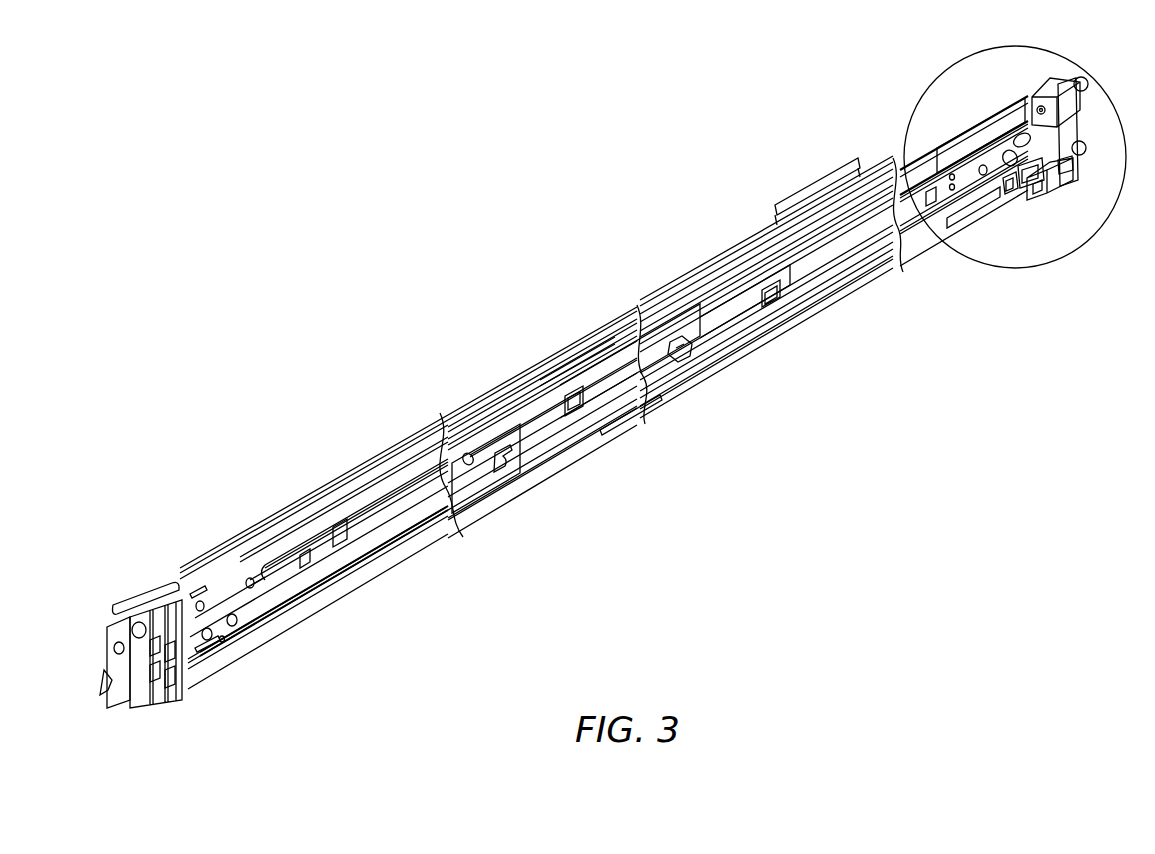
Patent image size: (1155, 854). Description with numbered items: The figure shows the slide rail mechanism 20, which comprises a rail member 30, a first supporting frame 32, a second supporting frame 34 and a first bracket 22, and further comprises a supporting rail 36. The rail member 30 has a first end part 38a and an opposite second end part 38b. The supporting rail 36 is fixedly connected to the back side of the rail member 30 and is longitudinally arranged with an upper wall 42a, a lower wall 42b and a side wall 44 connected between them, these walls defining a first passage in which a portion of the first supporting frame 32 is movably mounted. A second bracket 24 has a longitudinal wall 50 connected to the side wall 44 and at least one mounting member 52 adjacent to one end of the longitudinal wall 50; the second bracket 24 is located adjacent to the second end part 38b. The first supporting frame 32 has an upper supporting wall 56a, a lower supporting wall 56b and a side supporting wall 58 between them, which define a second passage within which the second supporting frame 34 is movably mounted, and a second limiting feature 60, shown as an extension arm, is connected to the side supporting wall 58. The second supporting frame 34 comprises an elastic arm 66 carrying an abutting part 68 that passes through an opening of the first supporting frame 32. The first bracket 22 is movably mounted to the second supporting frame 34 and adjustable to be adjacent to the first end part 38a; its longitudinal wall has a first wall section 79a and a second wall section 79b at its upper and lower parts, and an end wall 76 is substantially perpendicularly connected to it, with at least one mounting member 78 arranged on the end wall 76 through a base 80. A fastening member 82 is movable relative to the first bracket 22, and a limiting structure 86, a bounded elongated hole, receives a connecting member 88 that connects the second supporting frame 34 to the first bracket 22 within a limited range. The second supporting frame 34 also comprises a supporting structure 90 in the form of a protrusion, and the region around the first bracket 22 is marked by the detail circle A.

The slide rail mechanism 20 is at (502, 292).
The first bracket 22 is at (982, 104).
The second bracket 24 is at (179, 687).
The rail member 30 is at (665, 283).
The first supporting frame 32 is at (525, 460).
The second supporting frame 34 is at (688, 352).
The supporting rail 36 is at (291, 625).
The first end part 38a is at (853, 183).
The second end part 38b is at (186, 577).
The upper wall 42a is at (293, 525).
The lower wall 42b is at (337, 585).
The side wall 44 is at (476, 478).
The longitudinal wall 50 is at (222, 627).
The mounting member 52 is at (167, 673).
The upper supporting wall 56a is at (610, 344).
The lower supporting wall 56b is at (637, 402).
The side supporting wall 58 is at (619, 376).
The second limiting feature 60 is at (568, 404).
The elastic arm 66 is at (749, 312).
The abutting part 68 is at (774, 300).
The end wall 76 is at (1052, 80).
The mounting member 78 is at (1092, 155).
The first wall section 79a is at (960, 140).
The second wall section 79b is at (985, 235).
The base 80 is at (1068, 188).
The fastening member 82 is at (1085, 165).
The limiting structure 86 is at (1022, 134).
The connecting member 88 is at (1010, 198).
The supporting structure 90 is at (1028, 192).
The detail region A is at (906, 132).